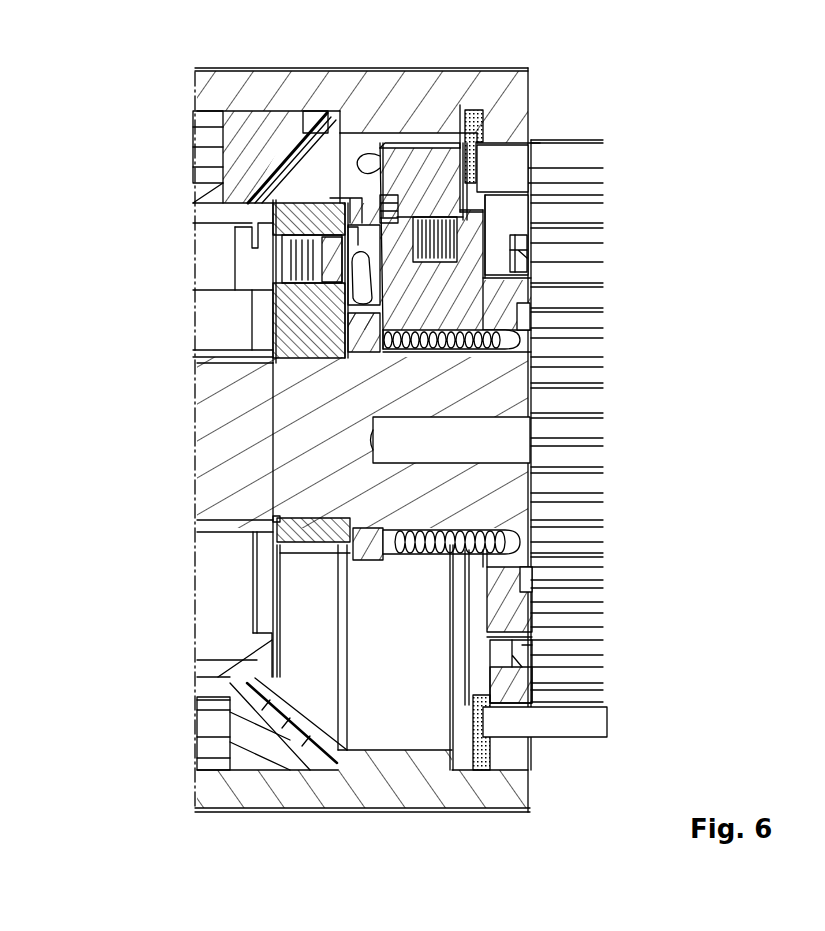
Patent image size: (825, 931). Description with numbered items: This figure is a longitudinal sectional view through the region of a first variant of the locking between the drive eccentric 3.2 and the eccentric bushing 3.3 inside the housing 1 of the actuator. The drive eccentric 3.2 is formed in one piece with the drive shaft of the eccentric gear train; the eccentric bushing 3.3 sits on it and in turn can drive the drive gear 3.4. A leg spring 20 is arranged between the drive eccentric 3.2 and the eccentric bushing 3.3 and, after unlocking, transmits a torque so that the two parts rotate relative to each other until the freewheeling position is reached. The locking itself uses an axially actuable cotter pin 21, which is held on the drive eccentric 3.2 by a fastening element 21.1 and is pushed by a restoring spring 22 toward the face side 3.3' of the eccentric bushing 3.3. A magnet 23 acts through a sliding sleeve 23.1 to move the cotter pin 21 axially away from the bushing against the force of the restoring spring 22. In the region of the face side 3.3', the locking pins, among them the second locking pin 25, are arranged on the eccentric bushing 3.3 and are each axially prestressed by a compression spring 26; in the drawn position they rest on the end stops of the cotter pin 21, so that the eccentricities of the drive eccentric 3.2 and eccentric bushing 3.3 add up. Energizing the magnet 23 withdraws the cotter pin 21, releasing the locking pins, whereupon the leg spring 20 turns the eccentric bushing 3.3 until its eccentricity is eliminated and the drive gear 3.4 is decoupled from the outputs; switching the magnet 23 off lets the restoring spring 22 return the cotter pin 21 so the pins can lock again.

The housing 1 is at (390, 83).
The magnet 23 is at (243, 158).
The sliding sleeve 23.1 is at (320, 130).
The restoring spring 22 is at (297, 254).
The cotter pin 21 is at (256, 278).
The fastening element 21.1 is at (297, 333).
The eccentric bushing 3.3 is at (571, 305).
The face side of the eccentric bushing 3.3' is at (576, 164).
The second locking pin 25 is at (398, 233).
The compression spring 26 is at (433, 232).
The drive eccentric 3.2 is at (457, 500).
The leg spring 20 is at (482, 545).
The drive gear 3.4 is at (573, 657).